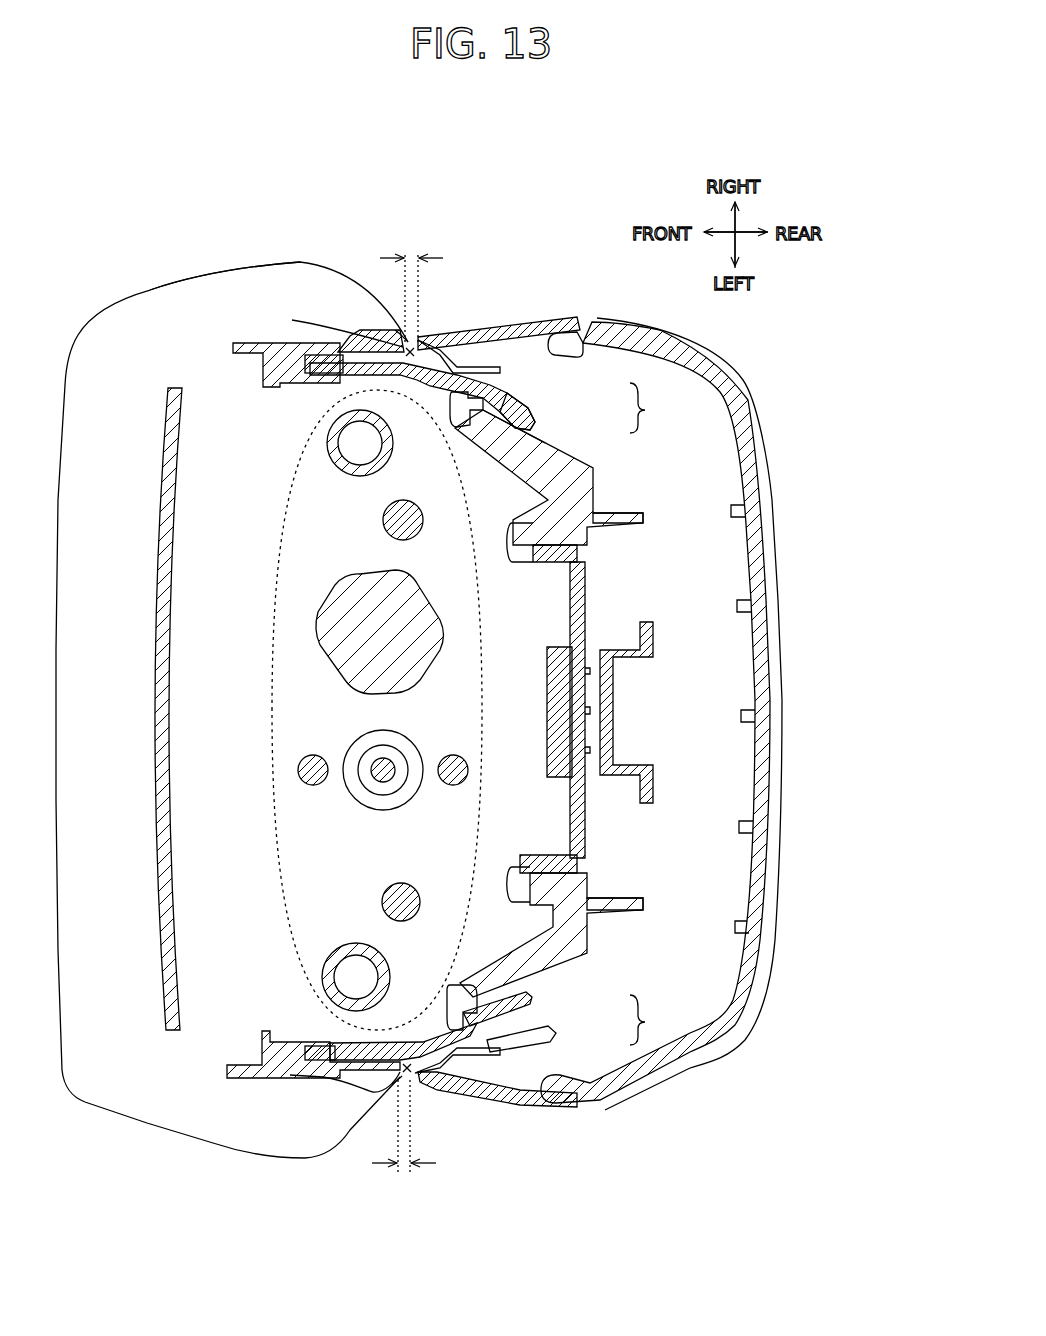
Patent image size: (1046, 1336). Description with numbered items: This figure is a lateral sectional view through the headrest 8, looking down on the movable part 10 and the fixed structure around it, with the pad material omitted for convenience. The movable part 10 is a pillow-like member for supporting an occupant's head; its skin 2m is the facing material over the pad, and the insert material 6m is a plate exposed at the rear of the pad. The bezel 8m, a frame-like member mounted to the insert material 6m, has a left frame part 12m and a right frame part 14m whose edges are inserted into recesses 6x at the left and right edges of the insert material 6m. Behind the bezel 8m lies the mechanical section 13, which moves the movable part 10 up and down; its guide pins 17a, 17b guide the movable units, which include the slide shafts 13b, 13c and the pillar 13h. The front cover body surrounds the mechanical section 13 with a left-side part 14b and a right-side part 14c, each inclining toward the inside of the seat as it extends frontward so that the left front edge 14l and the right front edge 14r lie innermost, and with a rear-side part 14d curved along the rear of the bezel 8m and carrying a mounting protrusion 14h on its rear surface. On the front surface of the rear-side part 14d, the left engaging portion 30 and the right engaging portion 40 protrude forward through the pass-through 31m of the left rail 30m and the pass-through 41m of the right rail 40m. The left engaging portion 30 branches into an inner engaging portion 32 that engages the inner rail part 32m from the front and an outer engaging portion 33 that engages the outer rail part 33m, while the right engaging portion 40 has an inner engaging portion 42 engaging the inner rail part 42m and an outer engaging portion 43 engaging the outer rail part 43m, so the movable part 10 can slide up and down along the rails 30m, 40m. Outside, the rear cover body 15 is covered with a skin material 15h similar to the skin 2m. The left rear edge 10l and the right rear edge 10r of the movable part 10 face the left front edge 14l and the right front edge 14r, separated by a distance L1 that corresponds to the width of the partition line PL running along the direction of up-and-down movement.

The headrest 8 is at (117, 1166).
The movable part 10 is at (211, 276).
The skin 2m is at (140, 293).
The right rear edge 10r is at (409, 340).
The left rear edge 10l is at (398, 1080).
The insert material 6m is at (272, 372).
The recesses 6x is at (323, 360).
The right frame part 14m is at (359, 342).
The left frame part 12m is at (353, 1055).
The right front edge 14r is at (416, 336).
The left front edge 14l is at (410, 1088).
The partition line PL is at (414, 350).
The right-side part 14c is at (531, 320).
The rear cover body 15 is at (769, 577).
The skin material 15h is at (783, 614).
The left-side part 14b is at (530, 1108).
The mechanical section 13 is at (270, 738).
The guide pin 17b is at (337, 465).
The guide pin 17a is at (330, 957).
The slide shaft 13c is at (384, 527).
The pillar 13h is at (340, 650).
The slide shaft 13b is at (388, 900).
The right engaging portion 40 is at (570, 617).
The outer engaging portion 43 is at (460, 406).
The outer rail part 43m is at (512, 410).
The pass-through 41m is at (540, 428).
The right rail 40m is at (660, 408).
The inner rail part 42m is at (578, 568).
The inner engaging portion 42 is at (513, 553).
The rear-side part 14d is at (612, 515).
The bezel 8m is at (560, 711).
The mounting protrusion 14h is at (648, 658).
The left engaging portion 30 is at (548, 953).
The inner rail part 32m is at (578, 864).
The inner engaging portion 32 is at (507, 880).
The outer engaging portion 33 is at (447, 1010).
The pass-through 31m is at (532, 999).
The outer rail part 33m is at (550, 1038).
The left rail 30m is at (660, 1020).
The distance L1 is at (407, 715).